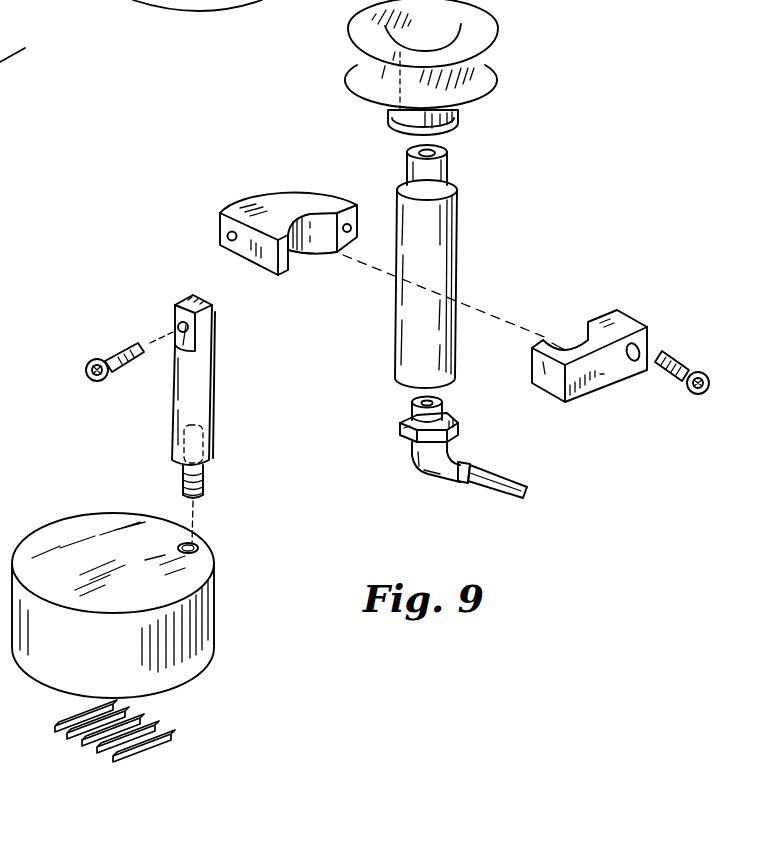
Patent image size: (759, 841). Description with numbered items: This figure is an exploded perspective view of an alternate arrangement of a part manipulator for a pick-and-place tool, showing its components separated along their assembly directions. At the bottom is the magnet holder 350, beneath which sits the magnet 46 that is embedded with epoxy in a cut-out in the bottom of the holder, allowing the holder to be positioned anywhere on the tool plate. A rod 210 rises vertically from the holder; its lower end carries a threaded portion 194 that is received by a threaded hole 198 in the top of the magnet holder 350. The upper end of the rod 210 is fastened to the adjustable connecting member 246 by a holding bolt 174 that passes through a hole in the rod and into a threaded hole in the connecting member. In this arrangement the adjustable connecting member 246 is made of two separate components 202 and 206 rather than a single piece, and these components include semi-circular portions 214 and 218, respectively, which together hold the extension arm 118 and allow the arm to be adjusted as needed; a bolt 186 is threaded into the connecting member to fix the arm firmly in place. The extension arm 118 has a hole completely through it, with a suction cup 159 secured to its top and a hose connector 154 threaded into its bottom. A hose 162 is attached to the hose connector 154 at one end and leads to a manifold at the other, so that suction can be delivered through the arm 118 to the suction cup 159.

The suction cup 159 is at (478, 33).
The extension arm 118 is at (423, 240).
The hose connector 154 is at (445, 462).
The hose 162 is at (498, 487).
The component of adjustable connecting member 202 is at (627, 323).
The semi-circular portion 214 is at (595, 292).
The adjustable connecting member 246 is at (682, 217).
The bolt 186 is at (678, 382).
The component of adjustable connecting member 206 is at (273, 198).
The semi-circular portion 218 is at (312, 253).
The rod 210 is at (190, 396).
The holding bolt 174 is at (123, 372).
The threaded portion 194 is at (205, 482).
The magnet holder 350 is at (122, 520).
The threaded hole 198 is at (214, 533).
The magnet 46 is at (153, 727).